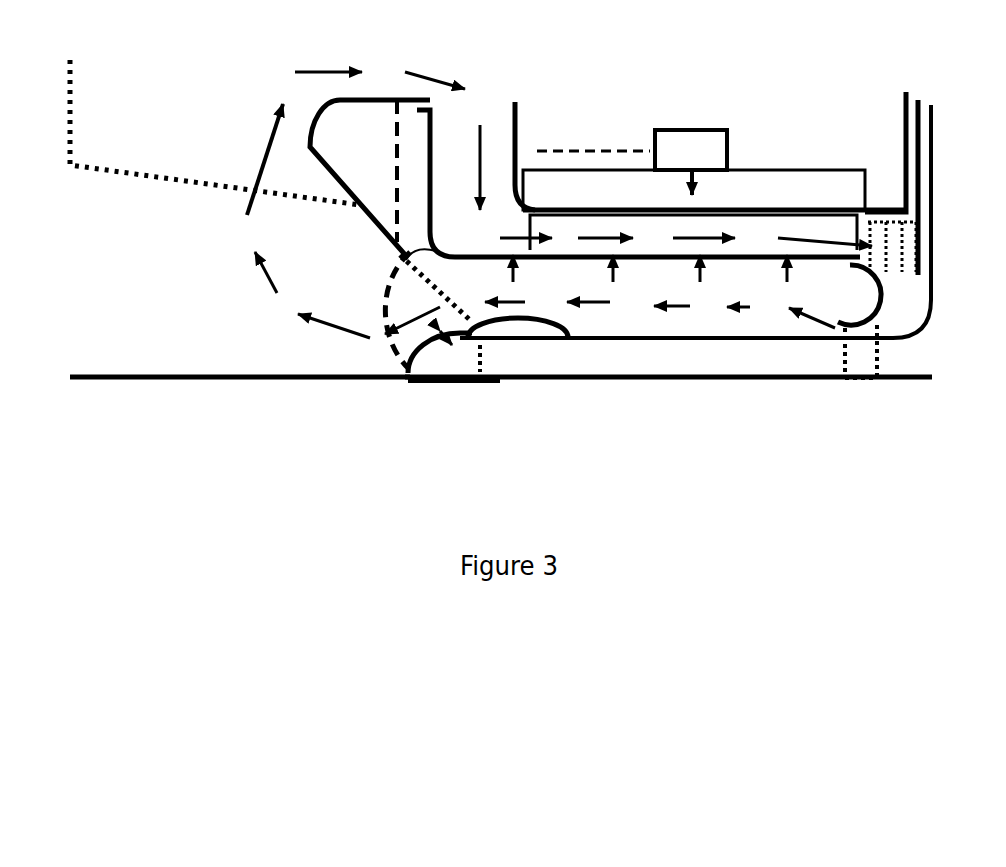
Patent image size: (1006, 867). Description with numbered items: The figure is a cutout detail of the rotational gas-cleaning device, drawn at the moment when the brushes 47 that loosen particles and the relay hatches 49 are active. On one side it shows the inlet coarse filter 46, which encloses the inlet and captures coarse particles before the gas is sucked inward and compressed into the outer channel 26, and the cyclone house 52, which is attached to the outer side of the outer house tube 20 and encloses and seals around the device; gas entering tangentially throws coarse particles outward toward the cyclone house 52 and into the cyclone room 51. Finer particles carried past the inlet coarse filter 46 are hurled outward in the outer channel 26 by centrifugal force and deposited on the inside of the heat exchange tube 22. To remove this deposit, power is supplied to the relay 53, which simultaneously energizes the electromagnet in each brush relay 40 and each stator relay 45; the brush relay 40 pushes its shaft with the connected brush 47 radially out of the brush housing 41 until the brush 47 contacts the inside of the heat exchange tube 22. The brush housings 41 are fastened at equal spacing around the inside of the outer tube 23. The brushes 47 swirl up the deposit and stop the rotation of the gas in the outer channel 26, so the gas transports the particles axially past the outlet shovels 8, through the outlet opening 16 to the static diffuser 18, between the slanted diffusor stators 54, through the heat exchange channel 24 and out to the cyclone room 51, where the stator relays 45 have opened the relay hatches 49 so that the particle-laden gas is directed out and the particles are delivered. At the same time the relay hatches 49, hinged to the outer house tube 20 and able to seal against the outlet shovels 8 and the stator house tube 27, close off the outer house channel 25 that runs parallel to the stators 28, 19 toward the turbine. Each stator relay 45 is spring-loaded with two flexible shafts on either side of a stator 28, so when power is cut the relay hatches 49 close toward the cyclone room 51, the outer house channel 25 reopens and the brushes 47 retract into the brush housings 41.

The outlet shovels 8 is at (935, 183).
The outlet opening 16 is at (903, 255).
The static diffuser 18 is at (908, 308).
The stator 19 is at (866, 360).
The outer house tube 20 is at (627, 380).
The heat exchange tube 22 is at (665, 262).
The outer tube 23 is at (901, 290).
The heat exchange channel 24 is at (760, 300).
The outer house channel 25 is at (673, 360).
The outer channel 26 is at (741, 232).
The stator house tube 27 is at (601, 345).
The stator 28 is at (415, 332).
The brush relay 40 is at (688, 152).
The brush housing 41 is at (572, 192).
The stator relay 45 is at (502, 332).
The inlet coarse filter 46 is at (187, 183).
The brush 47 is at (617, 233).
The relay hatch 49 is at (432, 345).
The cyclone room 51 is at (298, 350).
The cyclone house 52 is at (167, 380).
The relay 53 is at (385, 245).
The diffusor stators 54 is at (873, 328).